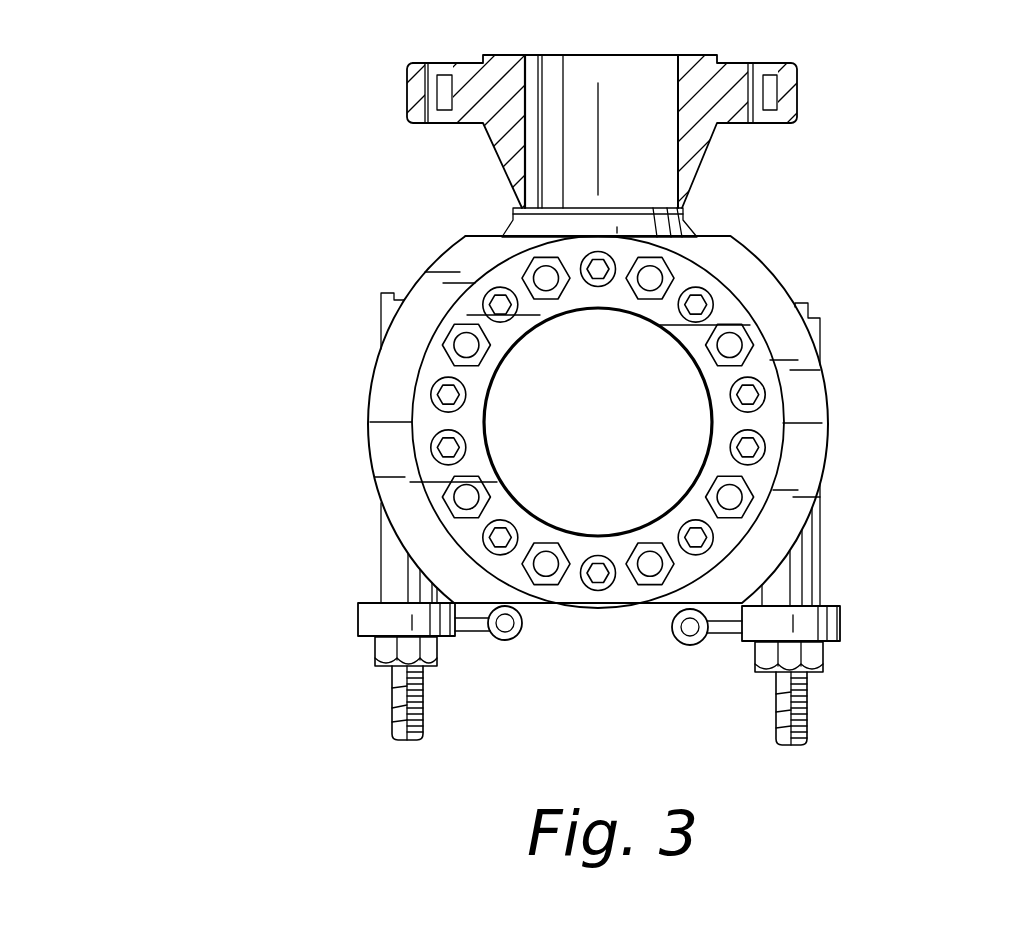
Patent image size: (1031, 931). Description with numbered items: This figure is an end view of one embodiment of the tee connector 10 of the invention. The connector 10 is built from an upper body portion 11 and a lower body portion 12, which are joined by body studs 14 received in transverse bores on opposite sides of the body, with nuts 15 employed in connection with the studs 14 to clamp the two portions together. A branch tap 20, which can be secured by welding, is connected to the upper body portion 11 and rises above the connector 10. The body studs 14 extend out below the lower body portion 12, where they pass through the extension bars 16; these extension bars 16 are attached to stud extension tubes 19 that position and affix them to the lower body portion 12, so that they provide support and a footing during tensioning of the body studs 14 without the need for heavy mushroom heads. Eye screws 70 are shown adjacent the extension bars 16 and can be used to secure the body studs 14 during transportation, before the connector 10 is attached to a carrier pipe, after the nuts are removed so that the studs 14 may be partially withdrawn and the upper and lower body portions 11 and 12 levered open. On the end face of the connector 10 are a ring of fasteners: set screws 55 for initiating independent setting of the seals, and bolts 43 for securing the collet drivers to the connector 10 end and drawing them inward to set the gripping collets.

The connector 10 is at (300, 382).
The upper body portion 11 is at (818, 360).
The lower body portion 12 is at (828, 455).
The body studs 14 is at (785, 713).
The nuts 15 is at (822, 658).
The extension bars 16 is at (358, 625).
The stud extension tubes 19 is at (380, 567).
The branch tap 20 is at (850, 118).
The bolts 43 is at (735, 326).
The set screws 55 is at (603, 591).
The eye screws 70 is at (517, 645).